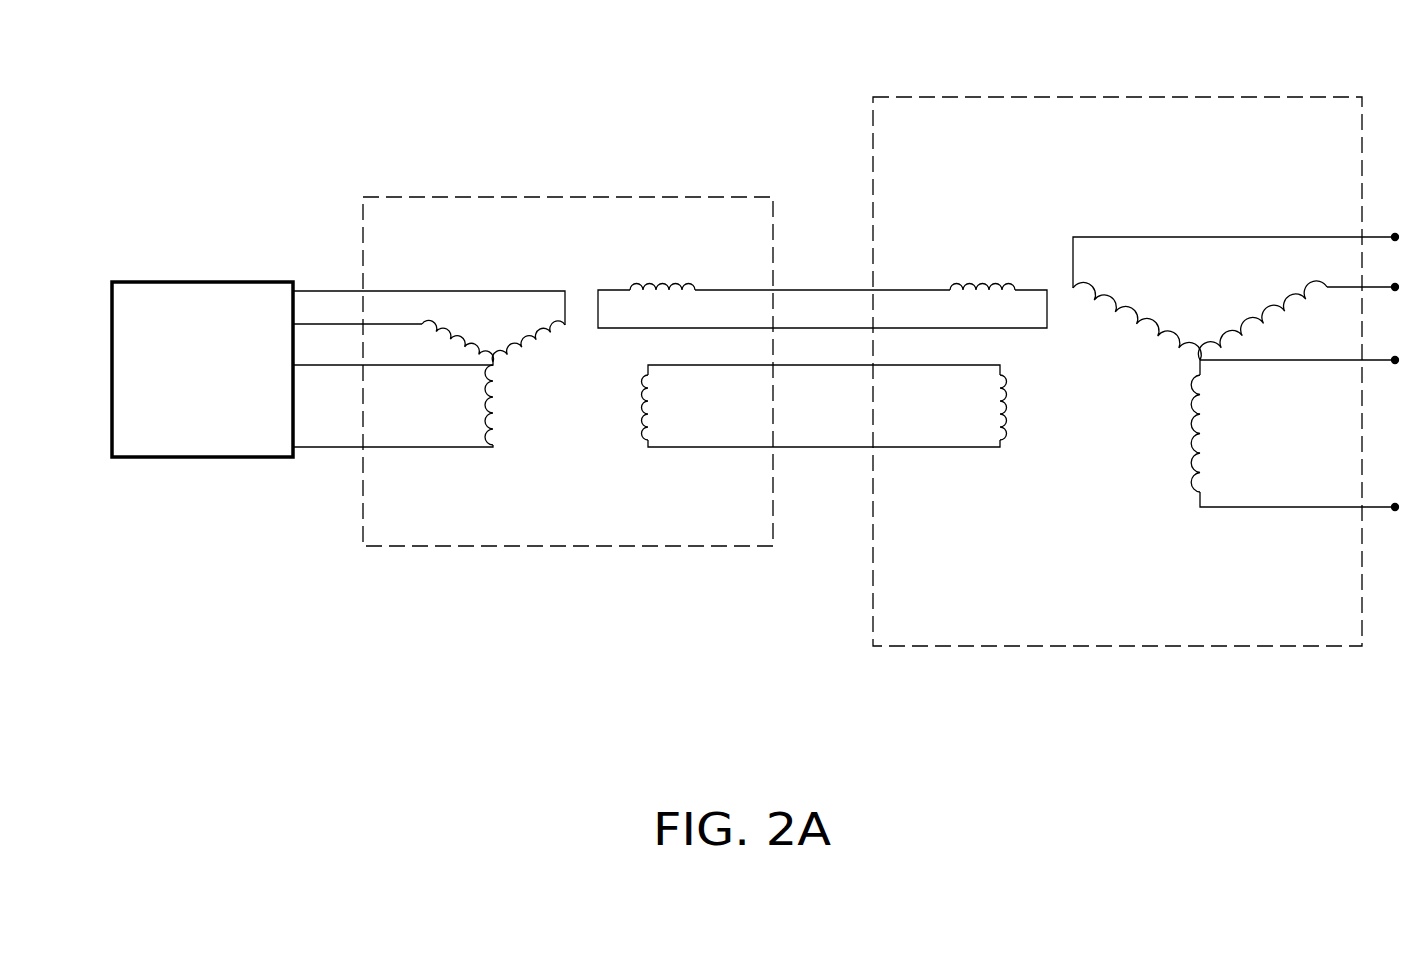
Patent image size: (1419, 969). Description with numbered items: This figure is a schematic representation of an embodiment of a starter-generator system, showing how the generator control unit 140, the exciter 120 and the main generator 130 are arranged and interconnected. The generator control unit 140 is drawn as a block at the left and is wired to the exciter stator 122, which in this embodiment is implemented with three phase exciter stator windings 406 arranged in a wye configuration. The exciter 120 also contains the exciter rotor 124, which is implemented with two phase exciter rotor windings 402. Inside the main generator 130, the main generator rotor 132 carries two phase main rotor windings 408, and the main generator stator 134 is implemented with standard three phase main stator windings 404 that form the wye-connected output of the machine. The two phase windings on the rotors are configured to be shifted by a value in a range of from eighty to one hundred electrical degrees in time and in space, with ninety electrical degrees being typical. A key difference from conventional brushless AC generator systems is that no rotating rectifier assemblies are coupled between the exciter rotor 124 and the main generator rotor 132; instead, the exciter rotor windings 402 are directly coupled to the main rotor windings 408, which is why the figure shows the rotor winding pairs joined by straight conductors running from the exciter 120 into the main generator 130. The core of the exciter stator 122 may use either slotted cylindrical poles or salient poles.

The generator control unit 140 is at (200, 282).
The exciter 120 is at (547, 197).
The exciter stator 122 is at (442, 327).
The exciter rotor 124 is at (821, 326).
The main generator 130 is at (1107, 97).
The main generator rotor 132 is at (959, 306).
The main generator stator 134 is at (1236, 326).
The exciter rotor windings 402 is at (822, 366).
The main stator windings 404 is at (1242, 322).
The exciter stator windings 406 is at (457, 332).
The main rotor windings 408 is at (993, 295).